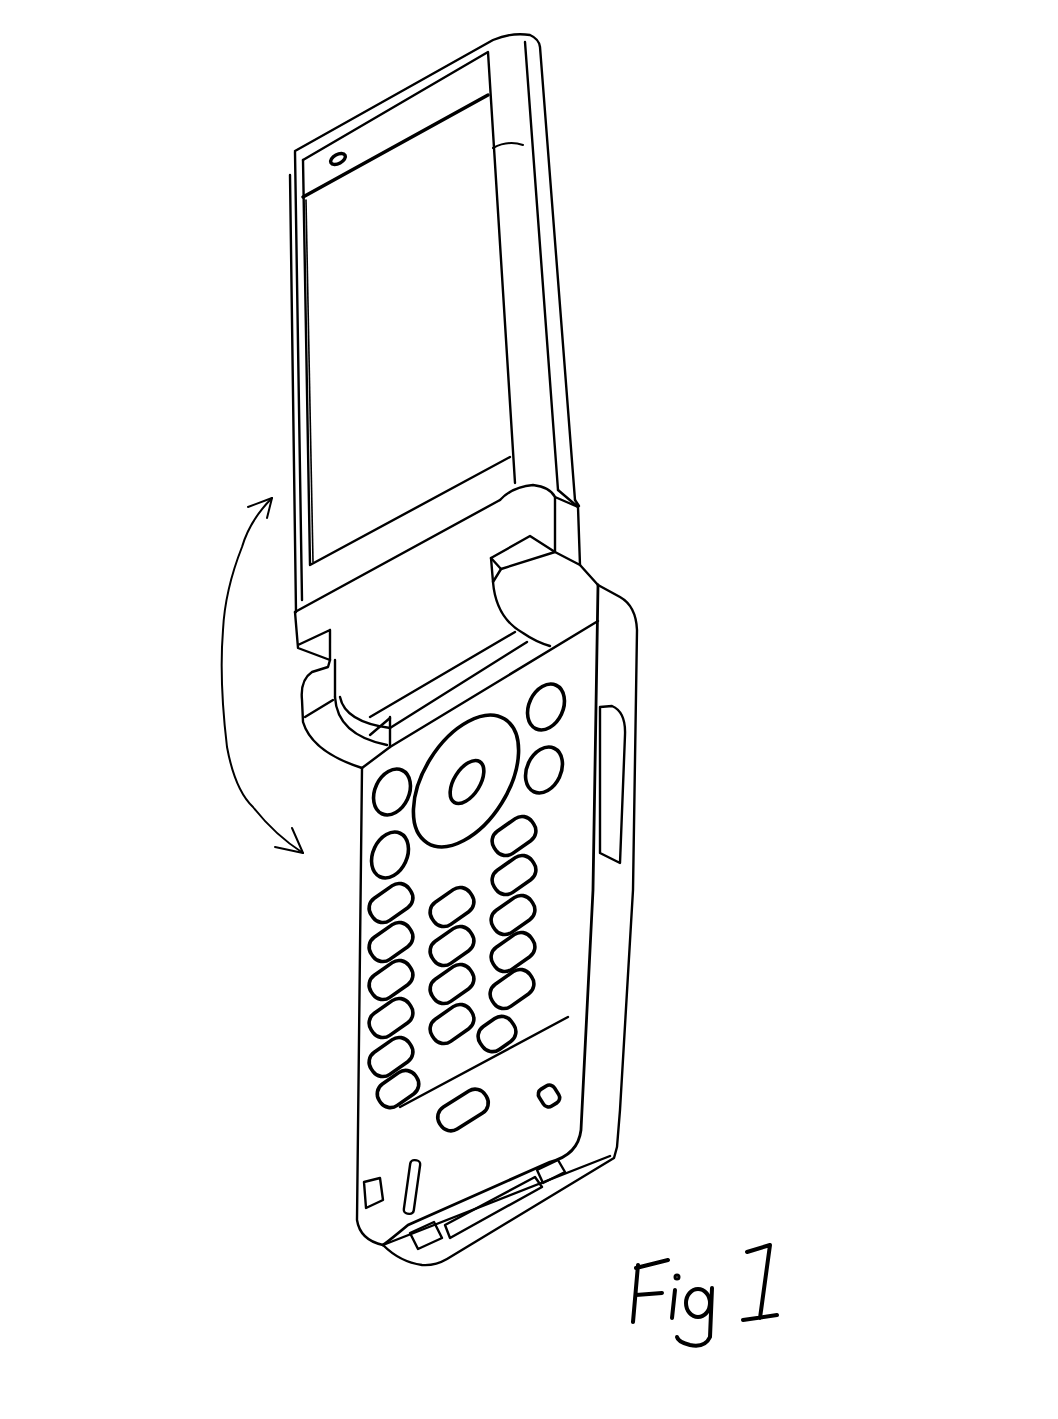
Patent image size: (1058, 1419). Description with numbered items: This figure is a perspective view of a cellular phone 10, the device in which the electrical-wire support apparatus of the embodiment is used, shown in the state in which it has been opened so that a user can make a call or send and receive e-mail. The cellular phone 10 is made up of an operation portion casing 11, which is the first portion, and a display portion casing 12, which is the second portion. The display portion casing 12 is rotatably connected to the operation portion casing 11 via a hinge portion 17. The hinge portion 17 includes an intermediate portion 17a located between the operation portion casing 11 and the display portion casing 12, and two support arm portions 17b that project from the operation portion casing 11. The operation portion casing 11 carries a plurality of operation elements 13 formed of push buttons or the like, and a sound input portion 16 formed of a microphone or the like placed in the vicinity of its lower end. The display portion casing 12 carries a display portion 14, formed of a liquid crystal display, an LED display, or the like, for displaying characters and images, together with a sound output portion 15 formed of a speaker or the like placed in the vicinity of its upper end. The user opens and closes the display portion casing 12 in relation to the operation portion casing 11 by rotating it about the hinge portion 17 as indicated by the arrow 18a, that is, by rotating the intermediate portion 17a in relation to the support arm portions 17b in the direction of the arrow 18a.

The cellular phone 10 is at (748, 593).
The operation portion casing 11 is at (638, 735).
The display portion casing 12 is at (561, 312).
The operation elements 13 is at (541, 941).
The display portion 14 is at (327, 333).
The sound output portion 15 is at (337, 143).
The sound input portion 16 is at (397, 1200).
The hinge portion 17 is at (702, 420).
The intermediate portion 17a is at (570, 542).
The support arm portions 17b is at (570, 588).
The arrow 18a is at (222, 680).